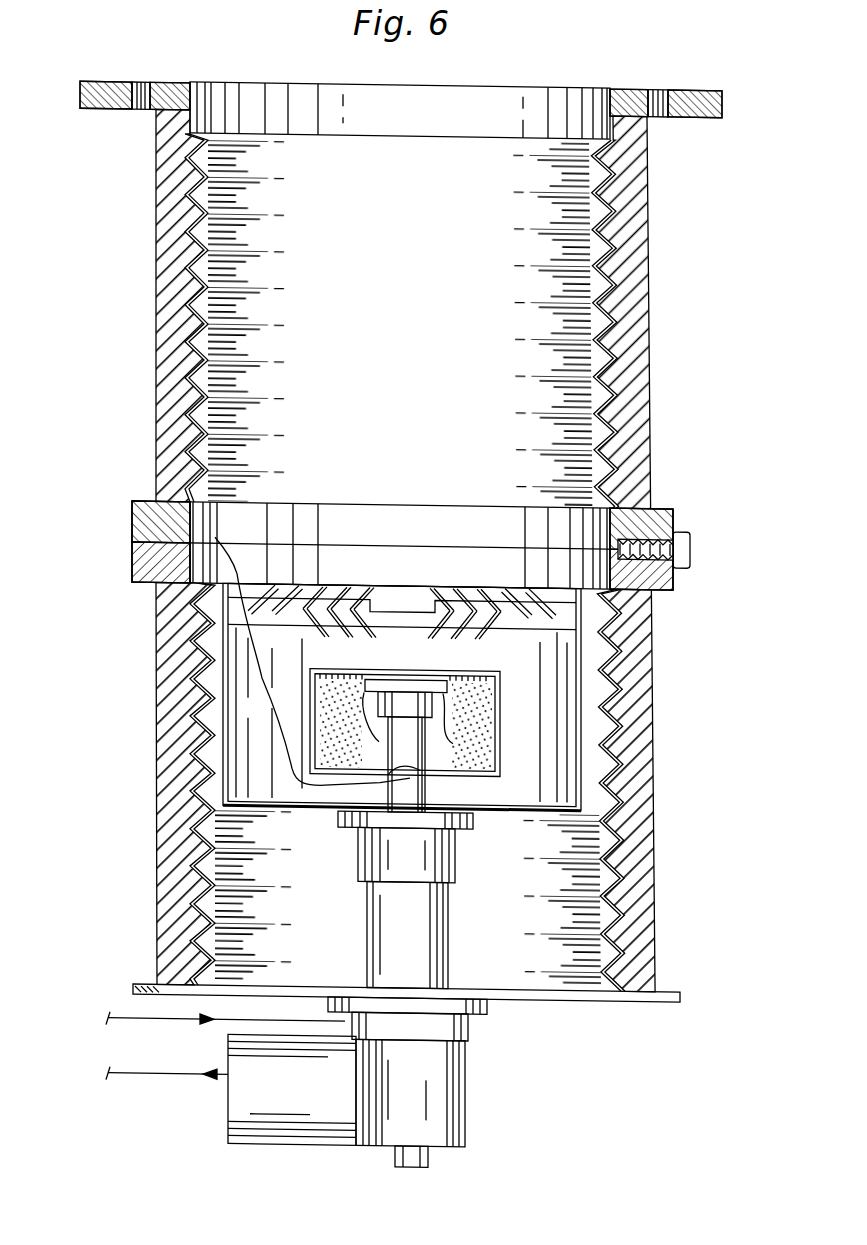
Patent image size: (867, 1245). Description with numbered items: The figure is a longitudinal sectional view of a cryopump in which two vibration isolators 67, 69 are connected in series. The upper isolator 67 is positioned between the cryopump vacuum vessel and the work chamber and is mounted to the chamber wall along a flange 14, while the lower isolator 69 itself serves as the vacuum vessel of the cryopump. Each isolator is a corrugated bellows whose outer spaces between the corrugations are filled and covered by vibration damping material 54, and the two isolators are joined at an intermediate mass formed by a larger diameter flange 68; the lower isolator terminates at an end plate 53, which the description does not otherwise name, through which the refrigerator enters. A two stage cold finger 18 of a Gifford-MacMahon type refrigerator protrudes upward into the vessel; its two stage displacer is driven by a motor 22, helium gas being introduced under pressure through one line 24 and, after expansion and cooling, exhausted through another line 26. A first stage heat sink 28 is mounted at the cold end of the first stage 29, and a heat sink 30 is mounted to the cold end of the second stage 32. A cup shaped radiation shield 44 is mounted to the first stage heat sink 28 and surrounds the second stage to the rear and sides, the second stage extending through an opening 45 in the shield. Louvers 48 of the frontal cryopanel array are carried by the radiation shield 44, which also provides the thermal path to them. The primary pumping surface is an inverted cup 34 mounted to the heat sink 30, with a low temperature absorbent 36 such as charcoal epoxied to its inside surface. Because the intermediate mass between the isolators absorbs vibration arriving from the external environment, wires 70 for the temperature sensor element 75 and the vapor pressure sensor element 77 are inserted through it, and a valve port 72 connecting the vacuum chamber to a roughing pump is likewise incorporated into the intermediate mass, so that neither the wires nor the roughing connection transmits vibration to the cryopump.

The flange 14 is at (415, 551).
The two stage cold finger 18 is at (478, 858).
The motor 22 is at (293, 1150).
The line 24 is at (184, 1028).
The line 26 is at (177, 1082).
The first stage heat sink 28 is at (350, 832).
The first stage 29 is at (450, 966).
The heat sink 30 is at (423, 723).
The second stage 32 is at (422, 799).
The inverted cup 34 is at (500, 742).
The low temperature absorbent 36 is at (487, 760).
The radiation shield 44 is at (228, 722).
The opening 45 is at (381, 803).
The louvers 48 is at (462, 640).
The base plate 53 is at (582, 1008).
The vibration damping material 54 is at (657, 338).
The vibration isolator 67 is at (128, 268).
The flange 68 is at (665, 510).
The vibration isolator 69 is at (136, 758).
The wires 70 is at (212, 546).
The valve port 72 is at (675, 527).
The temperature sensor element 75 is at (349, 724).
The vapor pressure sensor element 77 is at (378, 730).